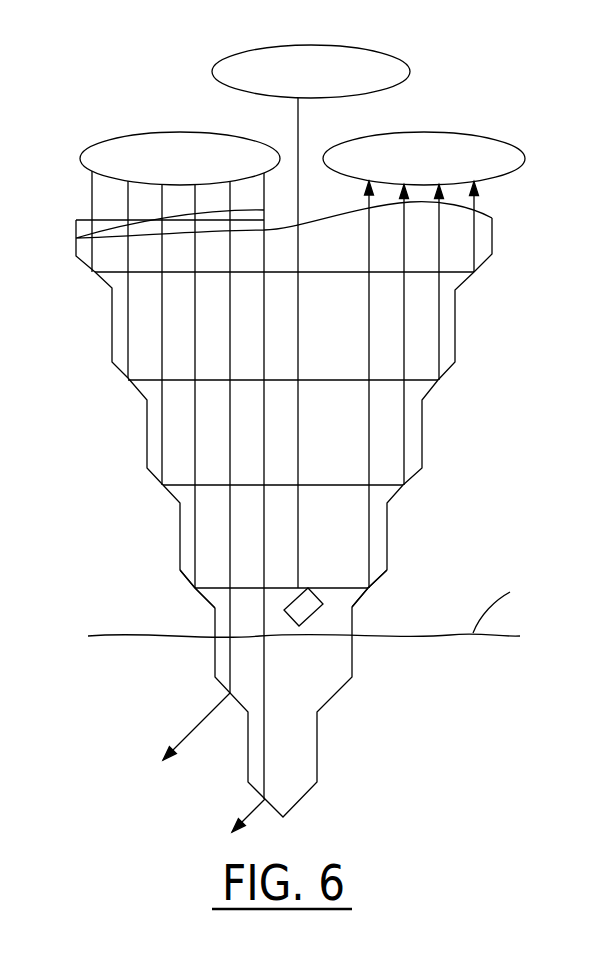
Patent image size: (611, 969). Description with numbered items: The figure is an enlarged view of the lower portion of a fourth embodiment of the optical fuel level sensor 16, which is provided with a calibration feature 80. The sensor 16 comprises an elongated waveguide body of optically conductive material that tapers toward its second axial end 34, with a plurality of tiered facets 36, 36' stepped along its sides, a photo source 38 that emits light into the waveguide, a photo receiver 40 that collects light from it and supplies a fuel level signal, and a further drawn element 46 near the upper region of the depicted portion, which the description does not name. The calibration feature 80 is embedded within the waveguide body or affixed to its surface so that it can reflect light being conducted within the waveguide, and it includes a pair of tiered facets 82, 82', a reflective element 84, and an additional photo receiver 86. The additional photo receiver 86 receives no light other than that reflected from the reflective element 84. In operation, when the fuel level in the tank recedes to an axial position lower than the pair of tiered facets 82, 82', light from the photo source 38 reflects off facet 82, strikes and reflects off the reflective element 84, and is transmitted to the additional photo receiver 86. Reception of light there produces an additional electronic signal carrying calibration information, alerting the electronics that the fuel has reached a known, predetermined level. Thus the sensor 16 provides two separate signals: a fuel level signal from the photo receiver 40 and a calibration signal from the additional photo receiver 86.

The optical fuel level sensor 16 is at (313, 438).
The second axial end 34 is at (340, 803).
The tiered facets 36 is at (114, 395).
The tiered facets 36' is at (458, 394).
The photo source 38 is at (185, 131).
The photo receiver 40 is at (424, 132).
The coupling ring 46 is at (127, 223).
The calibration feature 80 is at (140, 567).
The tiered facet 82 is at (182, 595).
The tiered facet 82' is at (380, 600).
The reflective element 84 is at (308, 588).
The additional photo receiver 86 is at (212, 82).